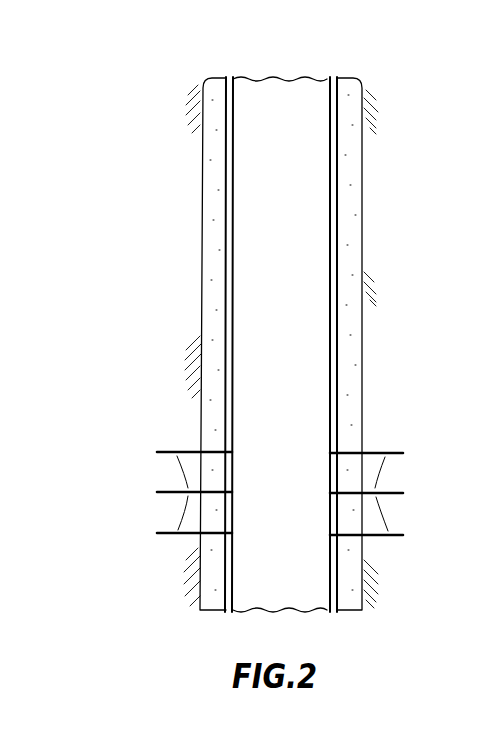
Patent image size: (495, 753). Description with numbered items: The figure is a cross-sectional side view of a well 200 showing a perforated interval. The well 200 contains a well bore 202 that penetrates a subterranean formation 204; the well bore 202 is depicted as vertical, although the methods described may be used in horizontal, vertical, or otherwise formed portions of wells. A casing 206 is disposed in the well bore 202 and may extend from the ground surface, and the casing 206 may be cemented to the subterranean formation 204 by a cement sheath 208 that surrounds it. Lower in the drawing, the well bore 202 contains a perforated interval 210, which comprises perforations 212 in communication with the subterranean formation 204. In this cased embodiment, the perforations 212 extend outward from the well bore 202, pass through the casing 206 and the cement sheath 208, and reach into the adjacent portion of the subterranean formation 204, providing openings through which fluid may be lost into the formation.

The well 200 is at (204, 72).
The well bore 202 is at (362, 170).
The subterranean formation 204 is at (180, 327).
The casing 206 is at (339, 200).
The cement sheath 208 is at (345, 229).
The perforated interval 210 is at (347, 477).
The perforations 212 is at (176, 530).